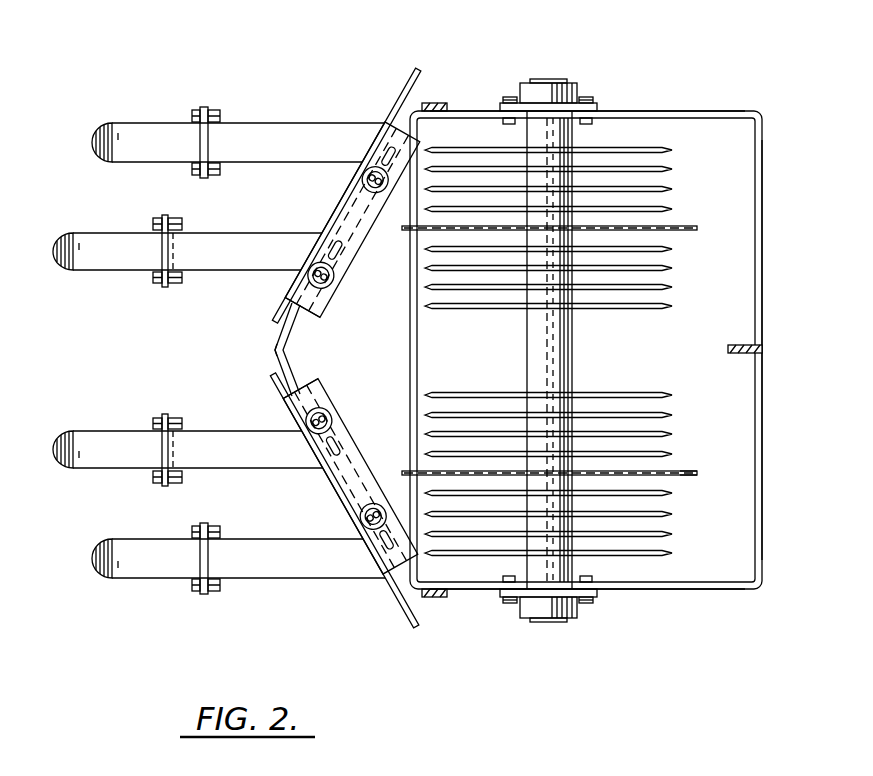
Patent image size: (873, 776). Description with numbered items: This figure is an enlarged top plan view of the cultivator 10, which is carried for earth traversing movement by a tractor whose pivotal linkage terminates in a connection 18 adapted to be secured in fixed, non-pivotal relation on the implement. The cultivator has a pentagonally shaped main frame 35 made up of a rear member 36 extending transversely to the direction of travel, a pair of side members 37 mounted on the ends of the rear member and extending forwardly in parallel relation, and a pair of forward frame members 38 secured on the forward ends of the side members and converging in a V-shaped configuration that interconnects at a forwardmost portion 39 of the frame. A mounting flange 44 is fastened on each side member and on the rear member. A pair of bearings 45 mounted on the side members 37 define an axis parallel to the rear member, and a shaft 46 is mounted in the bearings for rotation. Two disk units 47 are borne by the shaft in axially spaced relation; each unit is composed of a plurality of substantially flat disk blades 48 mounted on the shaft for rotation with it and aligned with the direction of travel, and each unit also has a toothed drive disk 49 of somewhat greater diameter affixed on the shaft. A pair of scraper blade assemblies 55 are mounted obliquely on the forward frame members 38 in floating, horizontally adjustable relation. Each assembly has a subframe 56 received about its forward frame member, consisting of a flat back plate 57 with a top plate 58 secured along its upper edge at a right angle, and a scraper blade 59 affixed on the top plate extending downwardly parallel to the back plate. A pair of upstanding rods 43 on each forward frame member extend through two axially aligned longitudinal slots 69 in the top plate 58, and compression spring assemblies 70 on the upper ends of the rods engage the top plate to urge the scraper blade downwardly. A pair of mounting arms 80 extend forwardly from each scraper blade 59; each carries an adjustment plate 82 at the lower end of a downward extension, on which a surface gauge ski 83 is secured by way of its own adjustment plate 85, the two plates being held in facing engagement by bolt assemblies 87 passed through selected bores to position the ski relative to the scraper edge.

The cultivator 10 is at (592, 82).
The connection 18 is at (762, 346).
The main frame 35 is at (640, 108).
The rear member 36 is at (765, 243).
The side members 37 is at (687, 113).
The forward frame members 38 is at (293, 325).
The forwardmost portion 39 is at (272, 351).
The rods 43 is at (368, 183).
The mounting flange 44 is at (440, 102).
The bearings 45 is at (545, 95).
The shaft 46 is at (560, 348).
The disk units 47 is at (678, 215).
The disk blades 48 is at (672, 189).
The toothed drive disk 49 is at (690, 477).
The scraper blade assemblies 55 is at (378, 118).
The subframe 56 is at (333, 320).
The back plate 57 is at (368, 238).
The top plate 58 is at (345, 252).
The scraper blade 59 is at (400, 98).
The longitudinal slots 69 is at (383, 152).
The compression spring assemblies 70 is at (364, 180).
The mounting arms 80 is at (245, 145).
The adjustment plate 82 is at (182, 222).
The ski 83 is at (140, 152).
The adjustment plate 85 is at (198, 172).
The bolt assemblies 87 is at (214, 106).